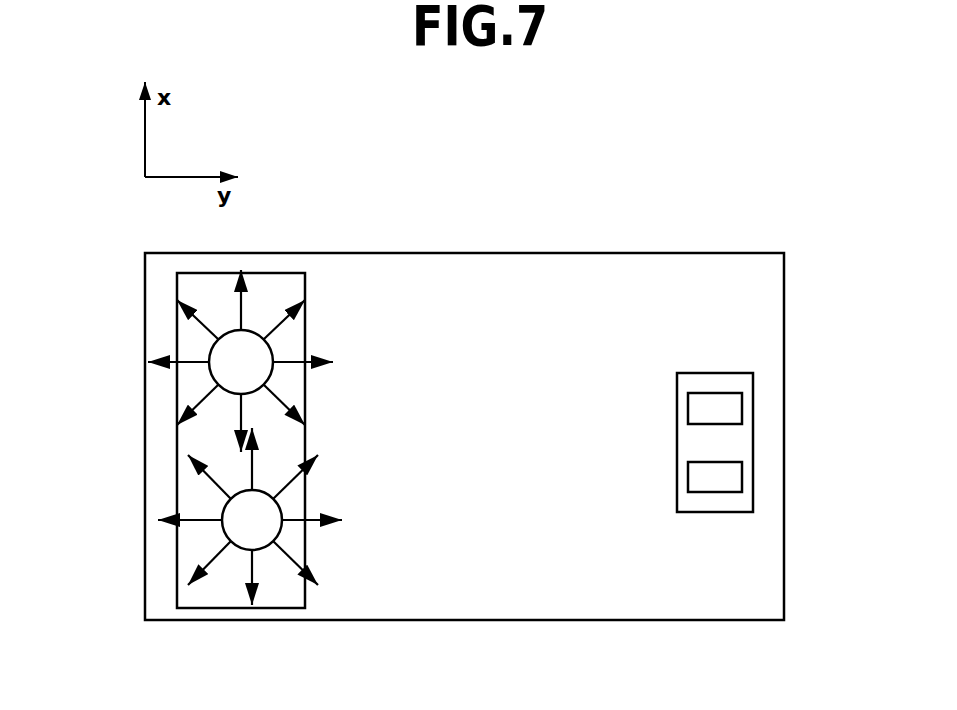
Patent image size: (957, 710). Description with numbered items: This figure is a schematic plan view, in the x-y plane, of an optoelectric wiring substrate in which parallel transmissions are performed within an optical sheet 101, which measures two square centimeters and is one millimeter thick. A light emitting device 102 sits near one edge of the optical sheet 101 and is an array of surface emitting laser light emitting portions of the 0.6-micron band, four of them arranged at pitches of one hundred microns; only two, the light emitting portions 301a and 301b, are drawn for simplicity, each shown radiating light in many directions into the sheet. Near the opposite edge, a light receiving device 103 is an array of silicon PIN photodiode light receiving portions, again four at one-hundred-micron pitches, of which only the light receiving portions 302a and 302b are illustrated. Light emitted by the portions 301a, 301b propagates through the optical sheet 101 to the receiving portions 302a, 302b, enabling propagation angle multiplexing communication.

The optical sheet 101 is at (537, 273).
The light emitting device 102 is at (283, 274).
The light receiving device 103 is at (728, 372).
The light emitting portion 301a is at (212, 348).
The light emitting portion 301b is at (222, 503).
The light receiving portion 302a is at (715, 407).
The light receiving portion 302b is at (715, 478).